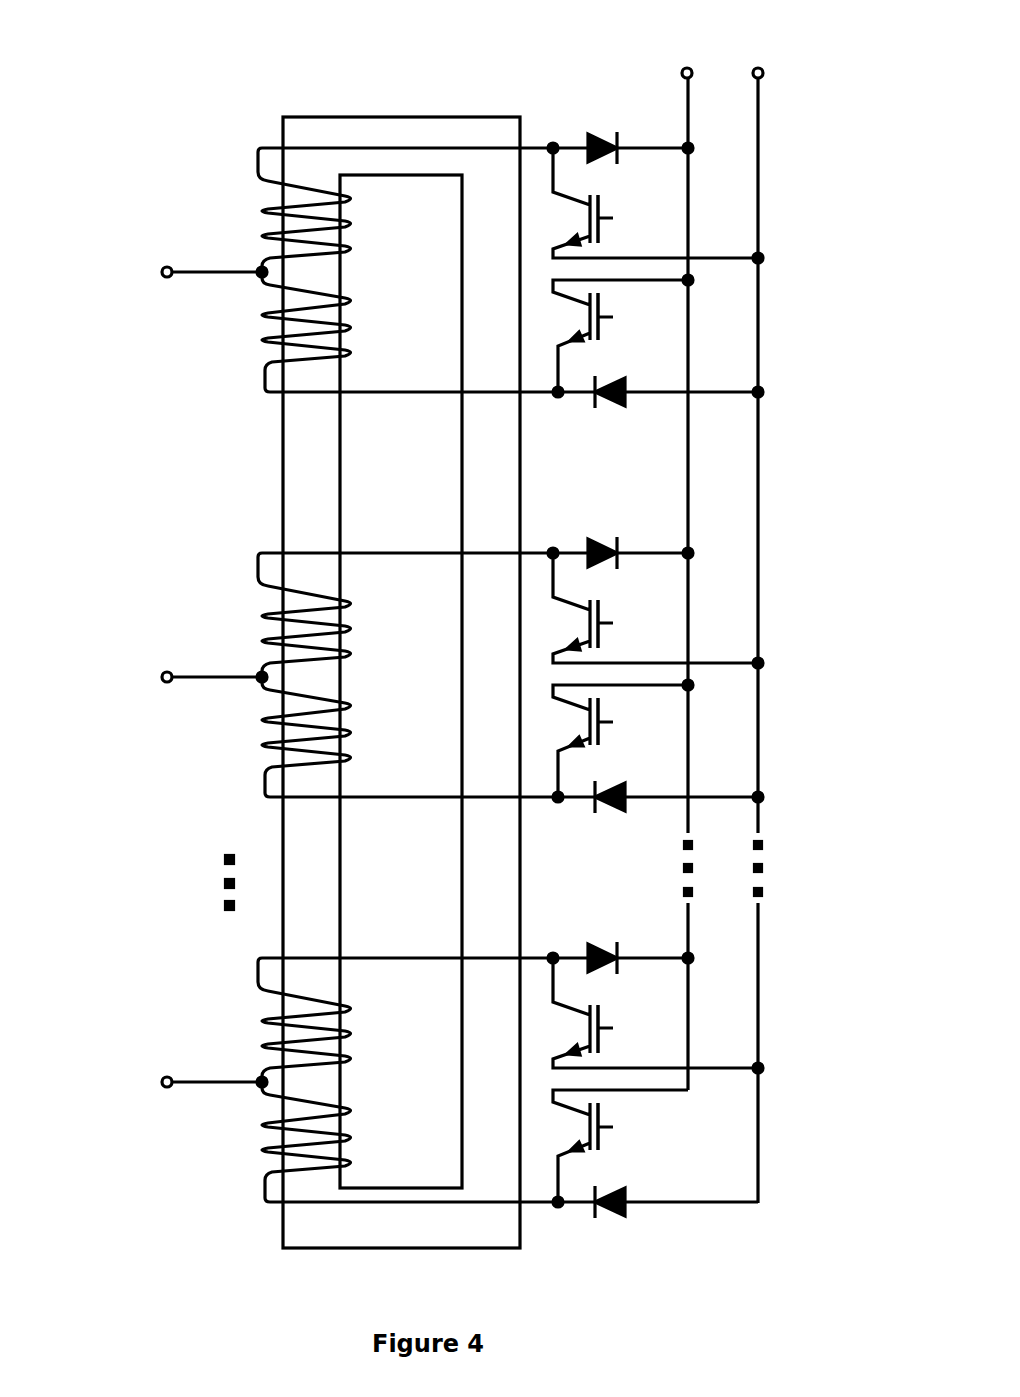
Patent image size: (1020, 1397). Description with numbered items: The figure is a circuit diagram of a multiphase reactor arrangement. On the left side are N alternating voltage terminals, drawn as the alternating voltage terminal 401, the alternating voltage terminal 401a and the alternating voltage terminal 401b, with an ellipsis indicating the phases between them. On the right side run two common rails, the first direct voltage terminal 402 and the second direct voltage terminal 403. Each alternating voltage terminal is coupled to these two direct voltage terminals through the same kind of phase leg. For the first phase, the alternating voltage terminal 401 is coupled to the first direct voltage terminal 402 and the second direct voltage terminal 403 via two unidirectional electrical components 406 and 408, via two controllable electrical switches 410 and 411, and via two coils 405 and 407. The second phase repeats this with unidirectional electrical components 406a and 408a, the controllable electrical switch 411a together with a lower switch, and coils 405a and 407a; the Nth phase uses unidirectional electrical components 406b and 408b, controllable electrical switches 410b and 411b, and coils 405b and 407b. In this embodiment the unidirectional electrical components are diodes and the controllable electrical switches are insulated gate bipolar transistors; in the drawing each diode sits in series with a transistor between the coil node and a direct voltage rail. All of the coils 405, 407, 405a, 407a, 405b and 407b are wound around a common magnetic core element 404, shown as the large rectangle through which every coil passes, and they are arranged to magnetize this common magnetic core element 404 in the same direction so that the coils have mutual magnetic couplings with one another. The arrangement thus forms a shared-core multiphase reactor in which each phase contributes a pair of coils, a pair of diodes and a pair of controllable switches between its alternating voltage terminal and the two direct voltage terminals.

The alternating voltage terminal 401 is at (167, 266).
The alternating voltage terminal 401a is at (178, 626).
The alternating voltage terminal 401b is at (177, 1031).
The first direct voltage terminal 402 is at (685, 66).
The second direct voltage terminal 403 is at (756, 66).
The common magnetic core element 404 is at (360, 117).
The coil 405 is at (358, 185).
The coil 405a is at (404, 617).
The coil 405b is at (404, 1022).
The unidirectional electrical component 406 is at (609, 130).
The unidirectional electrical component 406a is at (620, 520).
The unidirectional electrical component 406b is at (620, 926).
The coil 407 is at (358, 288).
The coil 407a is at (410, 737).
The coil 407b is at (410, 1142).
The unidirectional electrical component 408 is at (607, 406).
The unidirectional electrical component 408a is at (649, 830).
The unidirectional electrical component 408b is at (642, 1234).
The controllable electrical switch 410 is at (606, 338).
The controllable electrical switch 410b is at (606, 743).
The controllable electrical switch 411 is at (606, 228).
The controllable electrical switch 411a is at (658, 610).
The controllable electrical switch 411b is at (658, 1015).